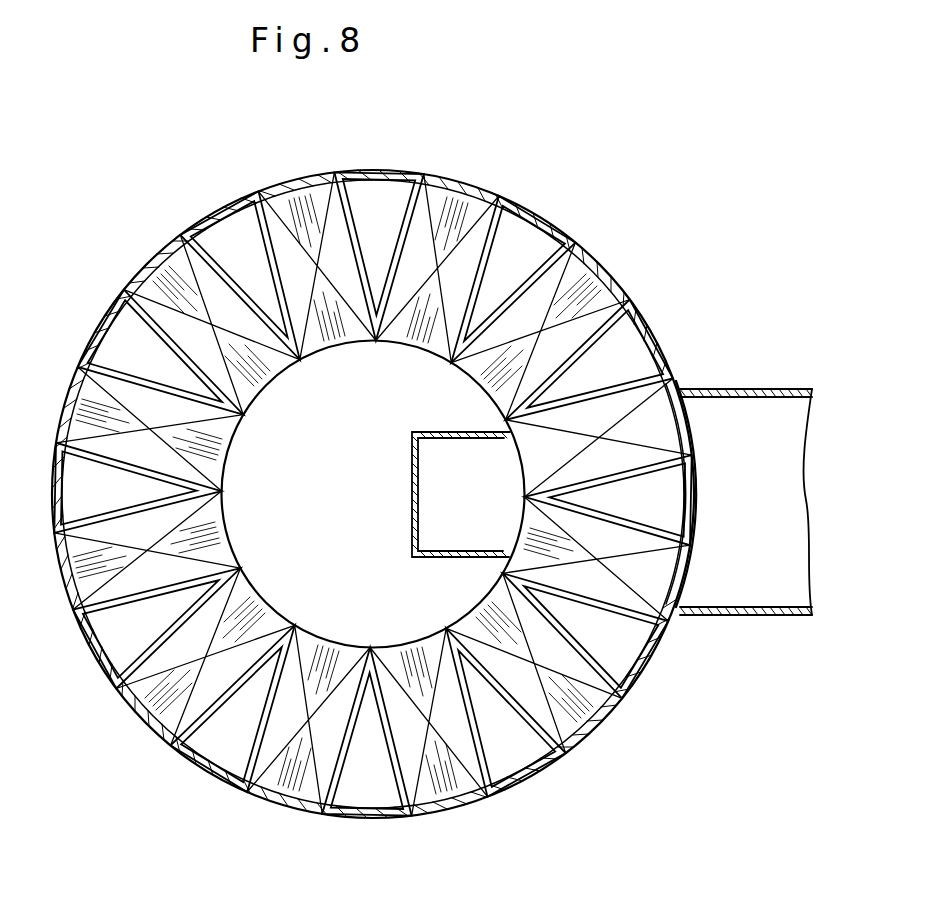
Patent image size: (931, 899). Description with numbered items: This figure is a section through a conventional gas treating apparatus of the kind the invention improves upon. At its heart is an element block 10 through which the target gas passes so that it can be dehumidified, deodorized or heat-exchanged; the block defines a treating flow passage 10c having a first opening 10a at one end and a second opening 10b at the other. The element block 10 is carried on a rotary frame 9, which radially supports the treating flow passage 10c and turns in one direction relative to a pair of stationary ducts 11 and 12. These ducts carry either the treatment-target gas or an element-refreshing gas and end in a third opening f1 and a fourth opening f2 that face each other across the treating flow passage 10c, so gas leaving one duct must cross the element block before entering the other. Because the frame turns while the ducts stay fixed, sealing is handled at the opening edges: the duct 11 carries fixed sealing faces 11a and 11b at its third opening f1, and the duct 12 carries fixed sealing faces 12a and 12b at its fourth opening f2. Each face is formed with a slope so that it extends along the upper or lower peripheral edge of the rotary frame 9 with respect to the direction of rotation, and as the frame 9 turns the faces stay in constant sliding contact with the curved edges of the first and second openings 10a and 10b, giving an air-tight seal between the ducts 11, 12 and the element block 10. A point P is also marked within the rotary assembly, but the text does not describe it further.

The rotary frame 9 is at (204, 214).
The element block 10 is at (484, 187).
The first opening 10a is at (515, 466).
The second opening 10b is at (696, 428).
The treating flow passage 10c is at (682, 417).
The duct 11 is at (410, 457).
The fixed sealing face 11a is at (399, 598).
The fixed sealing face 11b is at (404, 381).
The duct 12 is at (794, 388).
The fixed sealing face 12a is at (746, 647).
The fixed sealing face 12b is at (746, 328).
The center point P is at (372, 488).
The third opening f1 is at (477, 522).
The fourth opening f2 is at (746, 497).